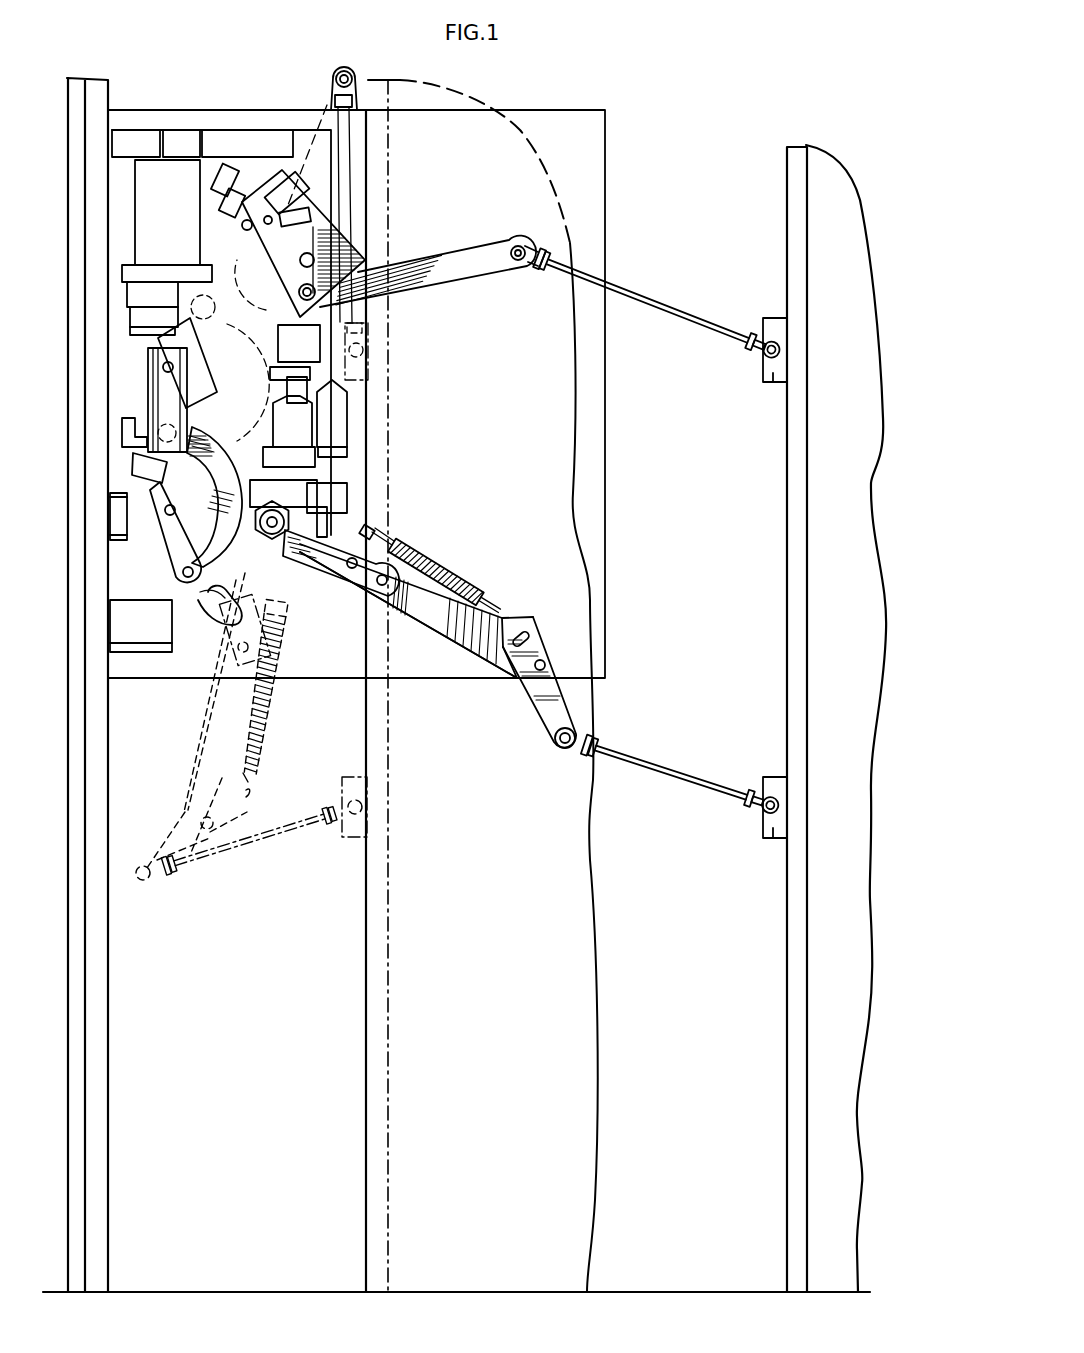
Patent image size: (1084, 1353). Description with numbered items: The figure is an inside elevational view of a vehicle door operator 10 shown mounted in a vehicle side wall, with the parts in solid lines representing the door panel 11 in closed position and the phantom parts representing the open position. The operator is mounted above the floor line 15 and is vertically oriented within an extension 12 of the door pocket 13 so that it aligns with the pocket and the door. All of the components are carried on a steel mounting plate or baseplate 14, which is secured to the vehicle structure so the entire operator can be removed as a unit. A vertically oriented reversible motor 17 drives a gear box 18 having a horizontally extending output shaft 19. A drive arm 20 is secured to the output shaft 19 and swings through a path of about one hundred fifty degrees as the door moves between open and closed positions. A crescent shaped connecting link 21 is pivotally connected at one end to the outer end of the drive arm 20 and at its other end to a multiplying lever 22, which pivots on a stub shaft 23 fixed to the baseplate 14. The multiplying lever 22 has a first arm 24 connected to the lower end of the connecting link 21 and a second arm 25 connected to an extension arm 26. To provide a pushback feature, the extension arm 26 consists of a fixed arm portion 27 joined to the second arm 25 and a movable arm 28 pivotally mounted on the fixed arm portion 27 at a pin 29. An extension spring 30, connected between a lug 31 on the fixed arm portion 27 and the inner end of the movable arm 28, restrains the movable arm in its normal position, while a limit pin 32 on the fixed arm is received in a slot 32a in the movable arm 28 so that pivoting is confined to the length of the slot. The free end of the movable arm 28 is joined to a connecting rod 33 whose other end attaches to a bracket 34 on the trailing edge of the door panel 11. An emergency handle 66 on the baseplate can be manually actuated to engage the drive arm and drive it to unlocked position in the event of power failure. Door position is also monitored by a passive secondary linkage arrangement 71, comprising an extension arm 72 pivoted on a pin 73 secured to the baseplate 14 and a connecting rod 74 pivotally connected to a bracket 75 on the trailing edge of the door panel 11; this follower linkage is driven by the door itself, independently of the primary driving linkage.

The door operator 10 is at (267, 91).
The door panel 11 is at (833, 250).
The extension of door pocket 12 is at (228, 1079).
The door pocket 13 is at (488, 1079).
The baseplate 14 is at (328, 662).
The floor line 15 is at (285, 1292).
The reversible motor 17 is at (166, 187).
The gear box 18 is at (132, 345).
The output shaft 19 is at (167, 368).
The drive arm 20 is at (120, 433).
The connecting link 21 is at (213, 513).
The multiplying lever 22 is at (297, 561).
The stub shaft 23 is at (268, 542).
The first arm 24 is at (250, 728).
The second arm 25 is at (330, 560).
The extension arm 26 is at (446, 649).
The fixed arm portion 27 is at (493, 648).
The movable arm 28 is at (540, 710).
The pin 29 is at (548, 663).
The extension spring 30 is at (447, 562).
The lug 31 is at (373, 531).
The limit pin 32 is at (523, 613).
The slot 32a is at (530, 647).
The connecting rod 33 is at (653, 767).
The bracket 34 is at (768, 832).
The emergency handle 66 is at (230, 597).
The secondary linkage arrangement 71 is at (452, 289).
The extension arm 72 is at (490, 267).
The pin 73 is at (300, 305).
The connecting rod 74 is at (658, 304).
The bracket 75 is at (768, 384).